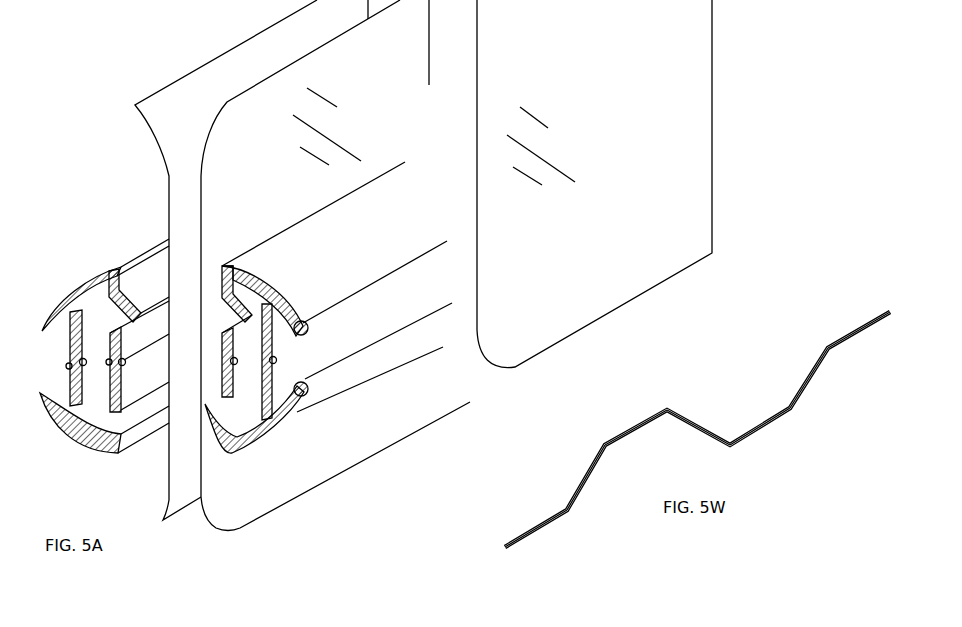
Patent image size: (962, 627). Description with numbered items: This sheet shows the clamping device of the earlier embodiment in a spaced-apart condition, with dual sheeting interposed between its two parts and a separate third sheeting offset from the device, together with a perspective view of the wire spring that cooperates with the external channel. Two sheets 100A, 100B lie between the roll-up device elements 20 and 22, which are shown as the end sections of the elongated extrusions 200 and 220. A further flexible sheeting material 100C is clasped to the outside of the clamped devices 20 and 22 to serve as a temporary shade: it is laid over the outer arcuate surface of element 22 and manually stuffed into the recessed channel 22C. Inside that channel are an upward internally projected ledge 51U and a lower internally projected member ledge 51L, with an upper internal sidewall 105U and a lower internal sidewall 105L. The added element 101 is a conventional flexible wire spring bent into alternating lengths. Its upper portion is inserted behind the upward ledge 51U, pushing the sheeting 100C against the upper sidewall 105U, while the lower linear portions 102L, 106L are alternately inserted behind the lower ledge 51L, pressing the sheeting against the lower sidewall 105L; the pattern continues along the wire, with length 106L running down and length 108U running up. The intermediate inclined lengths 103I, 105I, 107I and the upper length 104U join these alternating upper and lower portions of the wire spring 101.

In FIG. 5A, the first panel 100A is at (193, 70).
In FIG. 5A, the second panel 100B is at (220, 113).
In FIG. 5A, the flexible sheeting material 100C is at (709, 58).
In FIG. 5A, the first connector extrusion 200 is at (141, 253).
In FIG. 5A, the roll-up device element 20 is at (72, 288).
In FIG. 5A, the second connector extrusion 220 is at (365, 220).
In FIG. 5A, the roll-up device element 22 is at (263, 270).
In FIG. 5A, the recessed channel 22C is at (415, 297).
In FIG. 5A, the upper internal sidewall 105U is at (325, 333).
In FIG. 5A, the lower internal sidewall 105L is at (300, 380).
In FIG. 5A, the upward internally projected ledge 51U is at (285, 308).
In FIG. 5A, the lower internally projected member ledge 51L is at (296, 400).
In FIG. 5W, the flexible wire spring 101 is at (558, 465).
In FIG. 5W, the lower linear portion 102L is at (527, 533).
In FIG. 5W, the inclined segment 103I is at (580, 493).
In FIG. 5W, the upper segment 104U is at (632, 430).
In FIG. 5W, the inclined segment 105I is at (690, 418).
In FIG. 5W, the lower linear portion 106L is at (748, 440).
In FIG. 5W, the inclined segment 107I is at (810, 370).
In FIG. 5W, the upper length 108U is at (873, 322).